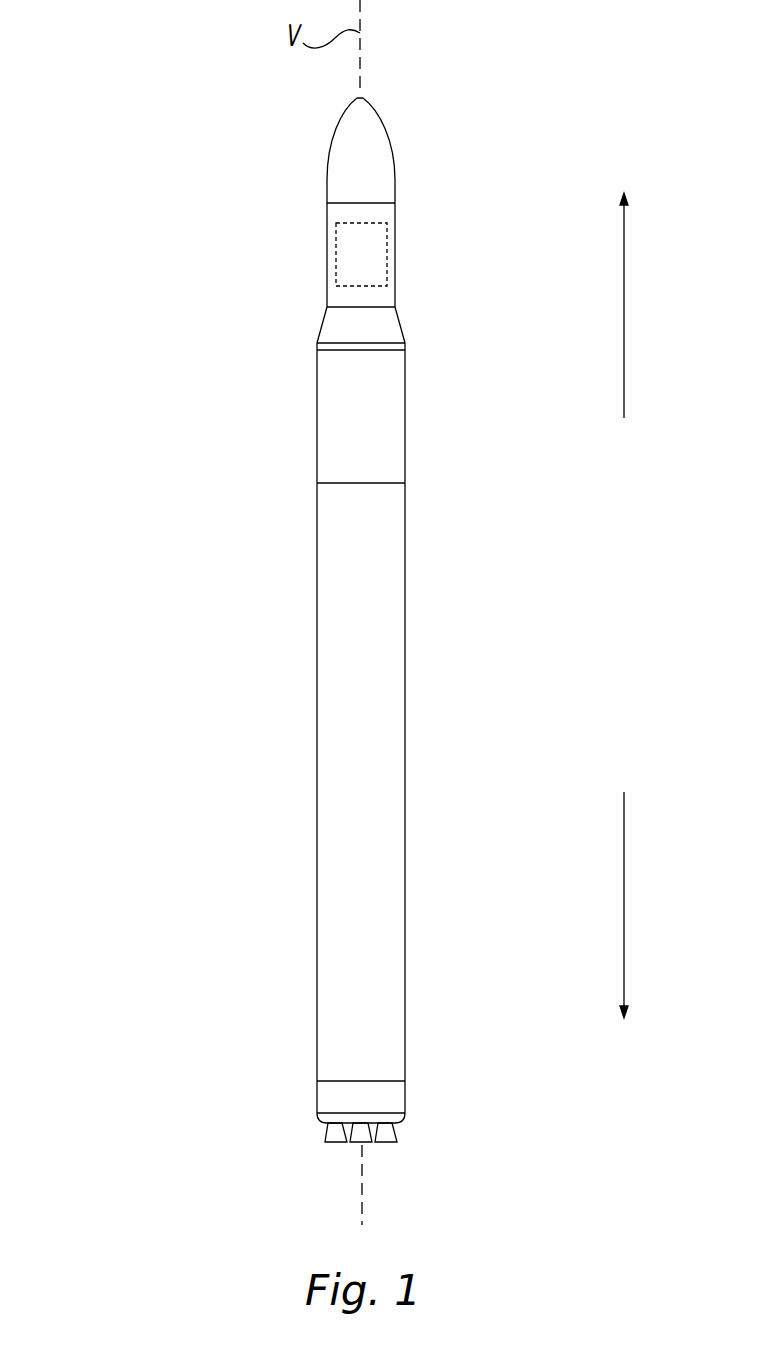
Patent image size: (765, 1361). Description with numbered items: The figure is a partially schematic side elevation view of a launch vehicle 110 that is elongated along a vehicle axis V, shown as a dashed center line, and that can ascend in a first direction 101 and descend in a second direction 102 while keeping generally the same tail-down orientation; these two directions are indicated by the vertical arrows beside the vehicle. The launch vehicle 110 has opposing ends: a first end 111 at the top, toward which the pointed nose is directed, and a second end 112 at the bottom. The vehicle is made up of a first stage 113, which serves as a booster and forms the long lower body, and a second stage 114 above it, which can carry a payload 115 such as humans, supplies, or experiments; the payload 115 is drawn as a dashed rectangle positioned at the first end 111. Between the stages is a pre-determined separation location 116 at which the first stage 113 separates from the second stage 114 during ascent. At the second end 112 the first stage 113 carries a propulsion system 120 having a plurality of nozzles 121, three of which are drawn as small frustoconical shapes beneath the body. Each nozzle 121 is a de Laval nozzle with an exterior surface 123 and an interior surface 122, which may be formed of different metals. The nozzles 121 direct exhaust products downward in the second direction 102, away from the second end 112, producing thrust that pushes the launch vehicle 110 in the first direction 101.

The launch vehicle 110 is at (121, 80).
The first end 111 is at (408, 74).
The payload 115 is at (377, 253).
The separation location 116 is at (256, 506).
The second stage 114 is at (382, 402).
The first stage 113 is at (390, 783).
The second end 112 is at (282, 1188).
The exterior surface 123 is at (327, 1128).
The interior surface 122 is at (332, 1143).
The nozzle 121 is at (388, 1141).
The propulsion system 120 is at (342, 1171).
The first direction 101 is at (654, 305).
The second direction 102 is at (654, 905).